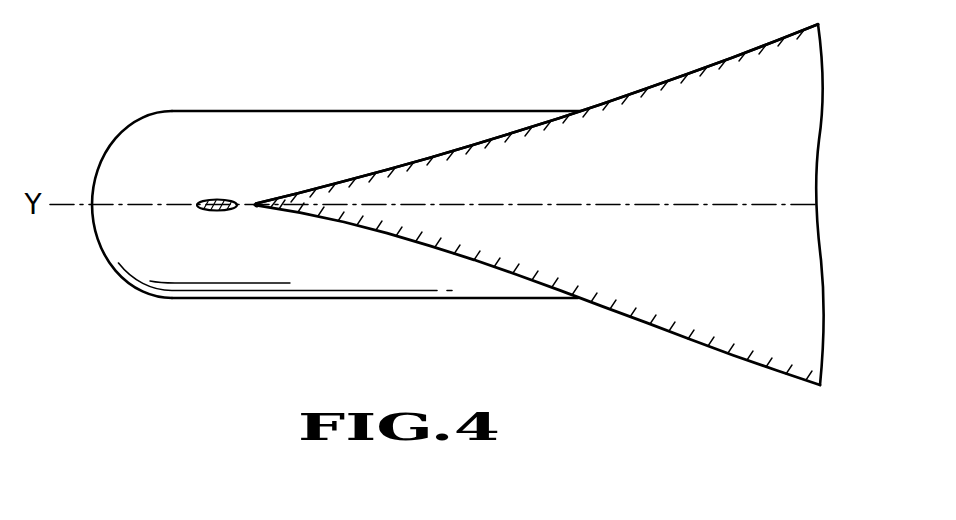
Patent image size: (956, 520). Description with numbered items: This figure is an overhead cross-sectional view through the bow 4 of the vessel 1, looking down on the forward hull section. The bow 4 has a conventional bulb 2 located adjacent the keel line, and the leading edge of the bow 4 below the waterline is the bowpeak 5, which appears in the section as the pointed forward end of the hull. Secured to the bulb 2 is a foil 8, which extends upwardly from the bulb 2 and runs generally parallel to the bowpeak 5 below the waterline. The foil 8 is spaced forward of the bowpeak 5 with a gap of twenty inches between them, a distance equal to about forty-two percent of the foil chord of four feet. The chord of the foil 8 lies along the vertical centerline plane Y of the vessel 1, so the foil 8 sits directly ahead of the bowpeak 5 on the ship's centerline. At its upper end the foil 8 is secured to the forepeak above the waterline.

The vessel 1 is at (648, 86).
The bulb 2 is at (260, 110).
The bow 4 is at (398, 168).
The bowpeak 5 is at (256, 210).
The foil 8 is at (225, 200).